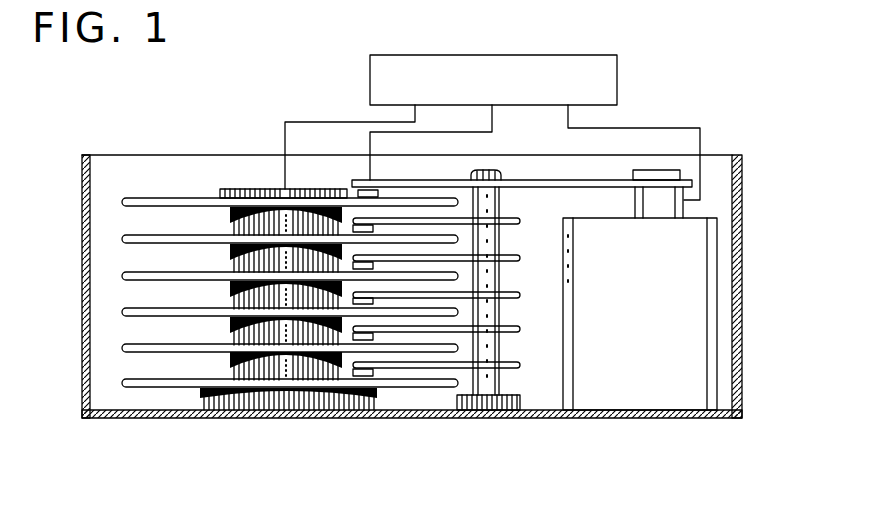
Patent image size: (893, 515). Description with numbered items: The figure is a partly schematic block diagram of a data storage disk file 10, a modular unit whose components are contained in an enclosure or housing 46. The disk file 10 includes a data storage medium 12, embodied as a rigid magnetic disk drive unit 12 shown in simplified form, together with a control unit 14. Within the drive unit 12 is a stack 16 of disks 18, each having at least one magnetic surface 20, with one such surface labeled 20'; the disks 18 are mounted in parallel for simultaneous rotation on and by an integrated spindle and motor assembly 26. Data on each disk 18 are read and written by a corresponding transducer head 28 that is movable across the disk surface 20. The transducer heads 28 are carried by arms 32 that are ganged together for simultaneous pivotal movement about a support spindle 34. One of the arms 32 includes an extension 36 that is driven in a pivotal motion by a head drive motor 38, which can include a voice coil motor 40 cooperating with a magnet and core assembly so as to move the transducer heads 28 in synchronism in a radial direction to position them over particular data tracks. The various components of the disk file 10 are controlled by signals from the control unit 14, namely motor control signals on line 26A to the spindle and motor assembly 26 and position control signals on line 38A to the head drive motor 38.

The data storage disk file 10 is at (738, 100).
The data storage medium 12 is at (246, 140).
The control unit 14 is at (620, 92).
The stack 16 is at (178, 172).
The disks 18 is at (122, 240).
The magnetic surface 20 is at (249, 322).
The contact plate 20' is at (262, 162).
The integrated spindle and motor assembly 26 is at (277, 362).
The line 26A is at (328, 120).
The transducer head 28 is at (362, 190).
The arms 32 is at (511, 224).
The support spindle 34 is at (503, 378).
The extension 36 is at (548, 180).
The head drive motor 38 is at (655, 386).
The line 38A is at (614, 128).
The voice coil motor 40 is at (687, 200).
The housing 46 is at (742, 352).